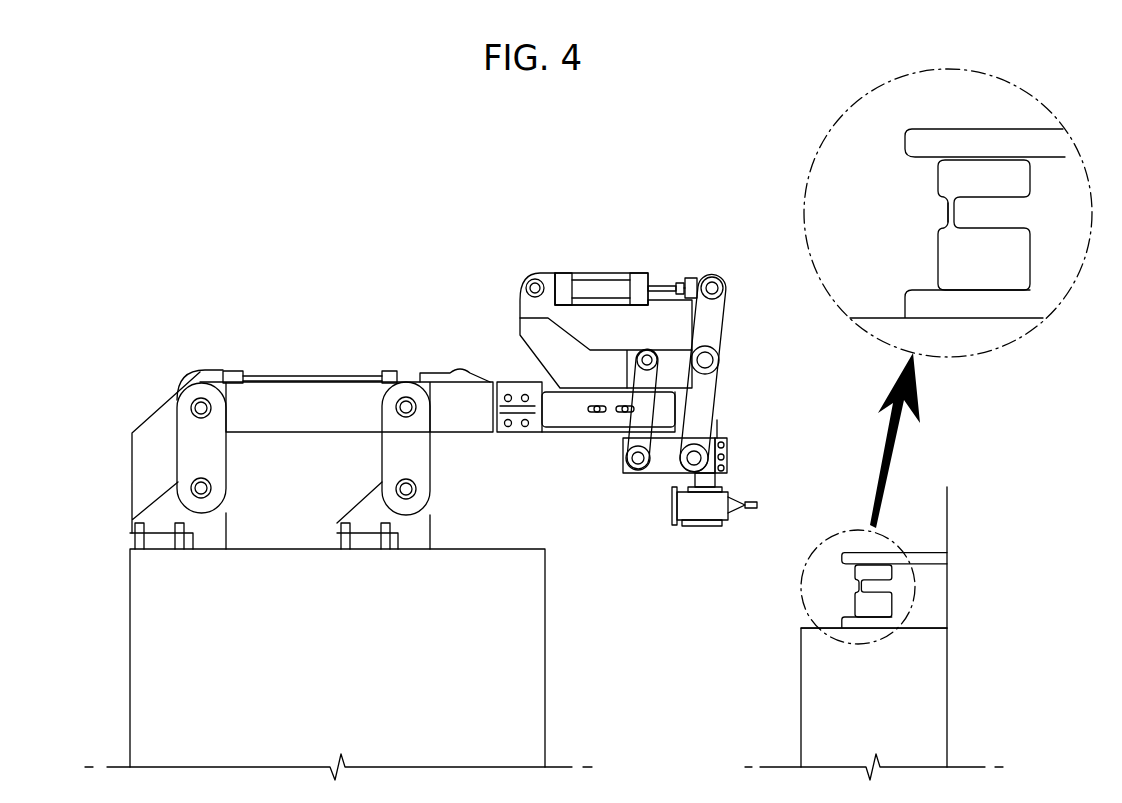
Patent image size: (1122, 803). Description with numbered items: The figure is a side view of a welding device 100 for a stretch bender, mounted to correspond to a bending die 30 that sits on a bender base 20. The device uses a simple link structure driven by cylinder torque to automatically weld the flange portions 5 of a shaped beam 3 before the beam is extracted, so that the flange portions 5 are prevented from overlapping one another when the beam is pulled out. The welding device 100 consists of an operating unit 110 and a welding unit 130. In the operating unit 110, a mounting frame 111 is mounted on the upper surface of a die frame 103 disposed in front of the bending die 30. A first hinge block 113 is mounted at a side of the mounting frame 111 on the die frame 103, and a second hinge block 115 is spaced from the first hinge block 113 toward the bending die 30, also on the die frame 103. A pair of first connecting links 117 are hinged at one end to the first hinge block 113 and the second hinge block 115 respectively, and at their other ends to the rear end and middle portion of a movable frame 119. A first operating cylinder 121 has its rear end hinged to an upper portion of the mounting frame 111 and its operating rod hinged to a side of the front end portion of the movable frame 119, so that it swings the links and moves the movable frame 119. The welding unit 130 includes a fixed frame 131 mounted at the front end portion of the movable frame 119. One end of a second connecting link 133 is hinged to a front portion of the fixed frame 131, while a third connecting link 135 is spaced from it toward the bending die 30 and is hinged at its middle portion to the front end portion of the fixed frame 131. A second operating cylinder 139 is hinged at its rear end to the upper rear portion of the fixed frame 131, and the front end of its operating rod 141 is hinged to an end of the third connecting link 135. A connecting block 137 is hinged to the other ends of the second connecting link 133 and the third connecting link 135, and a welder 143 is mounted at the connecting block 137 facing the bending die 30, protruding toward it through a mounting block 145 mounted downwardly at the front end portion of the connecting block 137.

The welding device 100 is at (445, 170).
The die frame 103 is at (157, 628).
The operating unit 110 is at (232, 334).
The mounting frame 111 is at (152, 430).
The first hinge block 113 is at (217, 520).
The second hinge block 115 is at (420, 542).
The first connecting link 117 is at (217, 460).
The movable frame 119 is at (442, 410).
The first operating cylinder 121 is at (283, 385).
The welding unit 130 is at (718, 277).
The fixed frame 131 is at (548, 352).
The second connecting link 133 is at (622, 423).
The third connecting link 135 is at (712, 326).
The connecting block 137 is at (732, 452).
The second operating cylinder 139 is at (600, 283).
The operating rod 141 is at (672, 290).
The welder 143 is at (740, 528).
The mounting block 145 is at (716, 478).
The bender base 20 is at (820, 707).
The bending die 30 is at (912, 550).
The shaped beam 3 is at (922, 254).
The flange portions 5 is at (947, 220).